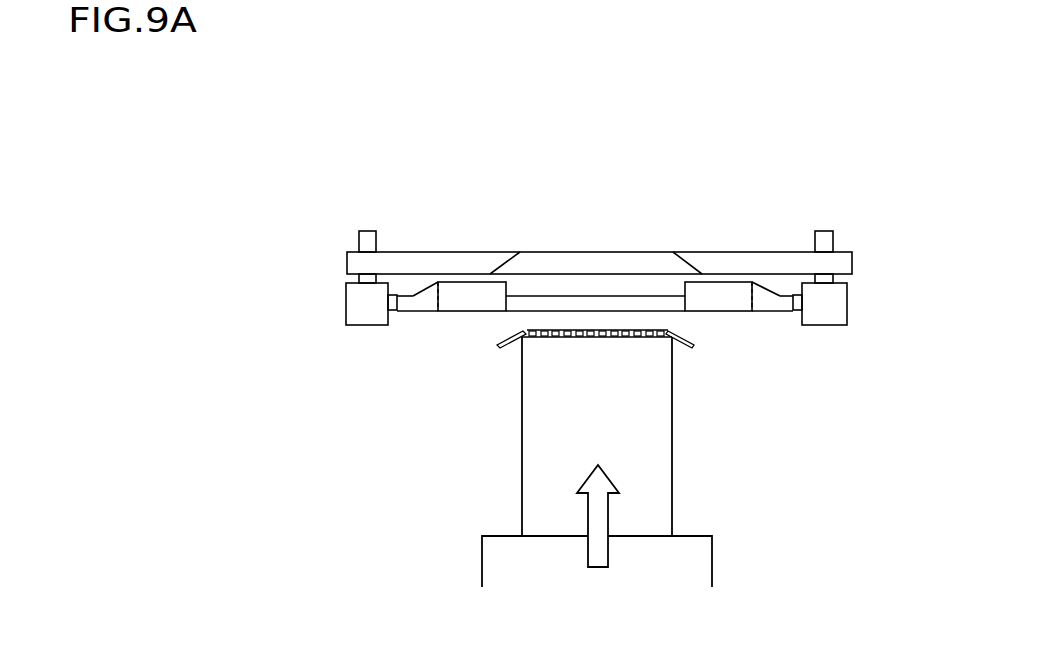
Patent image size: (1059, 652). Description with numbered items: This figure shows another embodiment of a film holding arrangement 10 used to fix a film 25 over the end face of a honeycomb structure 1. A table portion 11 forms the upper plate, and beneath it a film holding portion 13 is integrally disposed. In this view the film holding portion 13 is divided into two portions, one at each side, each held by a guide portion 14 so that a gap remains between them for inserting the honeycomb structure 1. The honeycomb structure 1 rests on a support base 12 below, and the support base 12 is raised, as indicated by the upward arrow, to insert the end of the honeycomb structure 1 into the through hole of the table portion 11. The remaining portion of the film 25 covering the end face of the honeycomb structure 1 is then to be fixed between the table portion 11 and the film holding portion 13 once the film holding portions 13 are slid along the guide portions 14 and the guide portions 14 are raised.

The honeycomb structure 1 is at (686, 470).
The substrate transfer device 10 is at (729, 166).
The table portion 11 is at (752, 272).
The support base 12 is at (687, 555).
The film holding portion 13 is at (413, 303).
The guide portions 14 is at (527, 305).
The film 25 is at (695, 340).